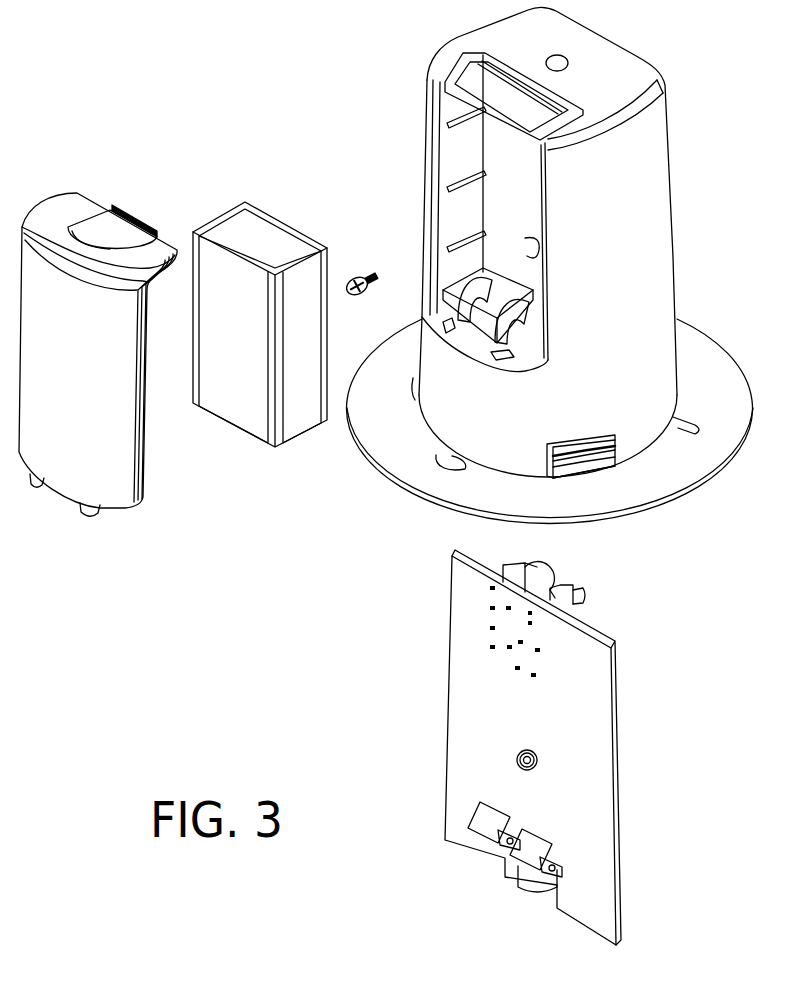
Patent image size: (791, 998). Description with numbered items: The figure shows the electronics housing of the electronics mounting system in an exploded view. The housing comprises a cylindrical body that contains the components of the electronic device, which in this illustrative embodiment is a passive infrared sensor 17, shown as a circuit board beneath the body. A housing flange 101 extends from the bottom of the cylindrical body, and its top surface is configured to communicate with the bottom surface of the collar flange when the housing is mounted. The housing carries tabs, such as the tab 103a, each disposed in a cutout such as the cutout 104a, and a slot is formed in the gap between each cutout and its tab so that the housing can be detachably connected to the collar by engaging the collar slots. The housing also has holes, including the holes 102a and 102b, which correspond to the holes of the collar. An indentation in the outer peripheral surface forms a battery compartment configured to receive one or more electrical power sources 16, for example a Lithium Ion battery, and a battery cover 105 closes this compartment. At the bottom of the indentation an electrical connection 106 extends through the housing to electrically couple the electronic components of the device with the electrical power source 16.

The battery cover 105 is at (77, 193).
The electrical power source 16 is at (252, 220).
The housing flange 101 is at (698, 333).
The hole 102a is at (680, 416).
The hole 102b is at (447, 469).
The tab 103a is at (563, 478).
The cutout 104a is at (607, 436).
The electrical connection 106 is at (465, 313).
The passive infrared (PIR) sensor 17 is at (611, 767).